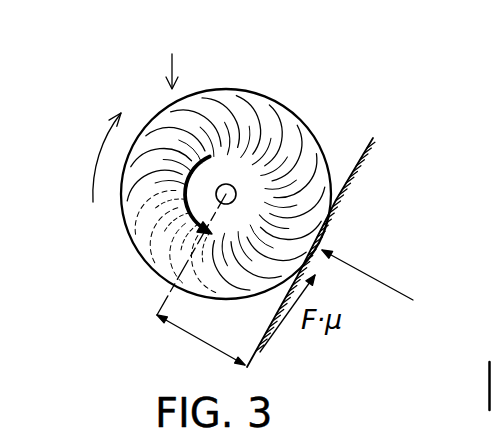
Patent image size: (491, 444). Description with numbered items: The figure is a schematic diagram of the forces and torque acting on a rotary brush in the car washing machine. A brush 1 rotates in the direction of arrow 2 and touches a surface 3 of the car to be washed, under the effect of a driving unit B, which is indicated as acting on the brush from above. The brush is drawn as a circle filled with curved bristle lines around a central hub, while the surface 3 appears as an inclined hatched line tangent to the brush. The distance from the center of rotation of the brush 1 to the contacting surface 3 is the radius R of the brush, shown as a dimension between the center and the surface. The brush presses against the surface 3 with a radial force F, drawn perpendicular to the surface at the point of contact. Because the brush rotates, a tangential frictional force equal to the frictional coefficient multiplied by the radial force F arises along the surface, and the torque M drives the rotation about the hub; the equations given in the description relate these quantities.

The brush 1 is at (268, 106).
The arrow 2 is at (108, 145).
The surface 3 is at (357, 172).
The driving unit B is at (169, 50).
The torque M is at (187, 212).
The radius of the brush R is at (201, 279).
The radial force F is at (367, 269).